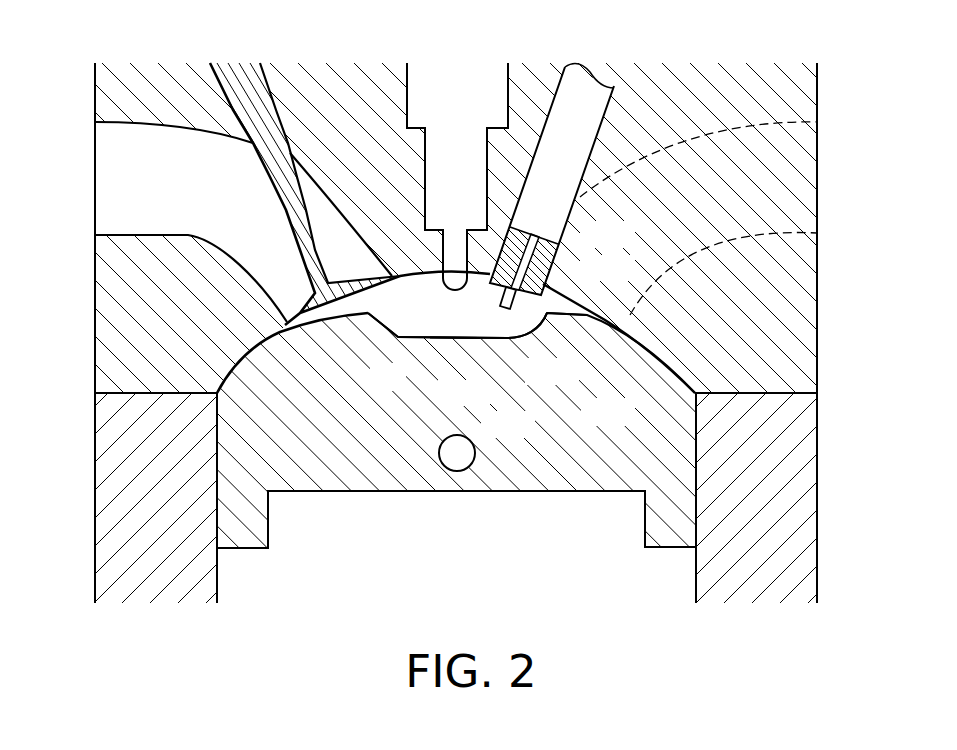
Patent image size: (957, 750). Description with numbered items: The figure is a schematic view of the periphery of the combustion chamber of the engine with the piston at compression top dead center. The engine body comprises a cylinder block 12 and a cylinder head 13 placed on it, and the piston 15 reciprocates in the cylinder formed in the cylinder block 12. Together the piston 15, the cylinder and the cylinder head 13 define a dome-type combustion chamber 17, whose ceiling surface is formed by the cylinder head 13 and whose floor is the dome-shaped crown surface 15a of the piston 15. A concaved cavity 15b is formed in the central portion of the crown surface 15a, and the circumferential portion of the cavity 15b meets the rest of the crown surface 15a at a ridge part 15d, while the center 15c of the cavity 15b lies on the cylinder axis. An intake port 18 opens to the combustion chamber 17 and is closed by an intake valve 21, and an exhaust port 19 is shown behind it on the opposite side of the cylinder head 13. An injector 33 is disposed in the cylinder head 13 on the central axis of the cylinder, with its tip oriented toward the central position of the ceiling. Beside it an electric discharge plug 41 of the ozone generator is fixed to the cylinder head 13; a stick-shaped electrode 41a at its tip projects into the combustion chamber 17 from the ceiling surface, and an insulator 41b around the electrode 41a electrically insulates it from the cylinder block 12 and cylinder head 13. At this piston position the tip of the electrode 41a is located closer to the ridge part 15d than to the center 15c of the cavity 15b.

The cylinder block 12 is at (817, 545).
The cylinder head 13 is at (817, 85).
The piston 15 is at (583, 492).
The crown surface 15a is at (590, 320).
The cavity 15b is at (486, 325).
The center of the cavity 15c is at (462, 338).
The ridge part 15d is at (549, 318).
The combustion chamber 17 is at (413, 321).
The intake port 18 is at (143, 123).
The exhaust port 19 is at (763, 123).
The intake valve 21 is at (297, 297).
The injector 33 is at (510, 82).
The electric discharge plug 41 is at (587, 93).
The electrode 41a is at (555, 248).
The insulator 41b is at (545, 280).